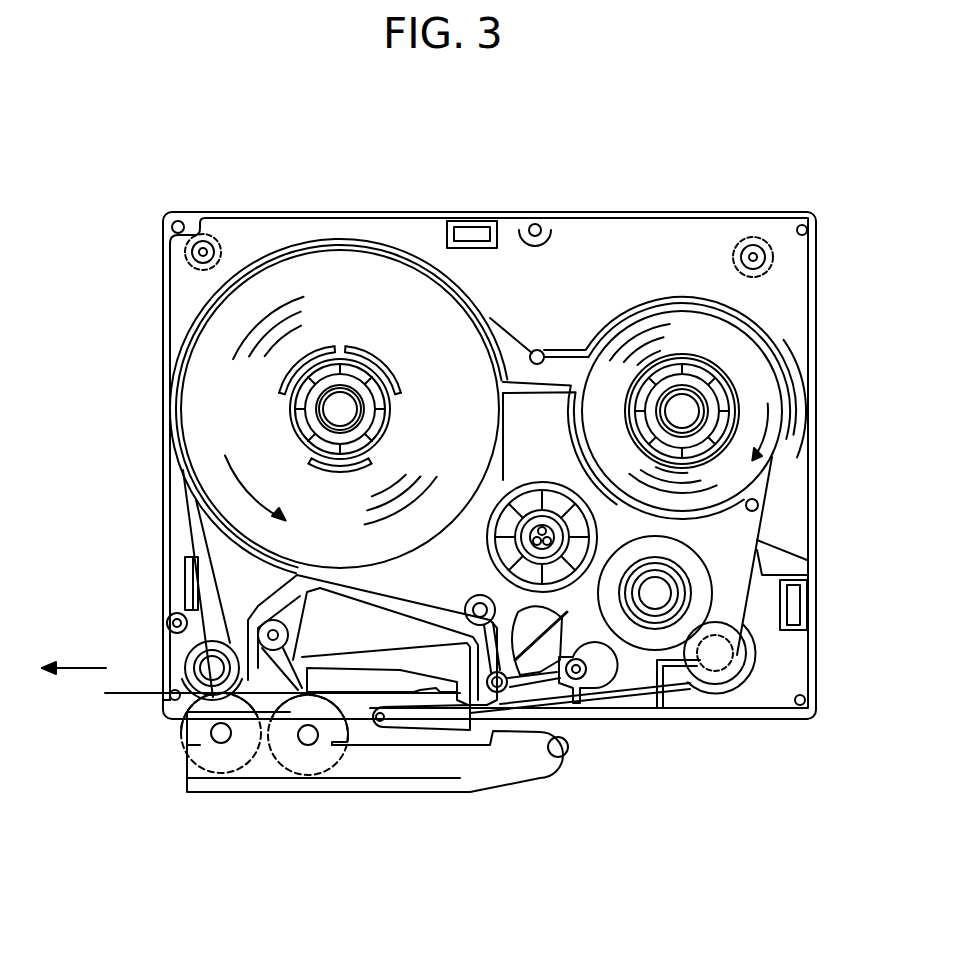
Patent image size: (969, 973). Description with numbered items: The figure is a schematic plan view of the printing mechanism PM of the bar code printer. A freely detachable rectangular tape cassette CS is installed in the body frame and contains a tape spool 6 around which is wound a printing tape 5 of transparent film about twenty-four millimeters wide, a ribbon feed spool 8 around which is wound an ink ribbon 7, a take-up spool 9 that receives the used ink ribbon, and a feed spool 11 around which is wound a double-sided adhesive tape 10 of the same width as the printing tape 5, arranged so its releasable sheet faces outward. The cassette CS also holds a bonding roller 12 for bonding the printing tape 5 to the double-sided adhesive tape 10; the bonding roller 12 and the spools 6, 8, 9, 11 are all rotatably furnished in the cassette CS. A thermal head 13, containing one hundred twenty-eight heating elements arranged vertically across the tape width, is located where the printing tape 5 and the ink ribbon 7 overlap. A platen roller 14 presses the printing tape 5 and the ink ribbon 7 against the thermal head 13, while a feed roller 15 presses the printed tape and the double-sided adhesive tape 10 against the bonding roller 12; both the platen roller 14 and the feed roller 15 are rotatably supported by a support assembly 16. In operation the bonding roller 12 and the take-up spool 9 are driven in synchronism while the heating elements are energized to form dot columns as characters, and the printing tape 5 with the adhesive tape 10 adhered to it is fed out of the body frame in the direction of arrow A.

The tape cassette CS is at (818, 462).
The double-sided adhesive tape 10 is at (328, 262).
The feed spool 11 is at (343, 357).
The printing tape 5 is at (692, 325).
The tape spool 6 is at (718, 378).
The take-up spool 9 is at (550, 480).
The ink ribbon 7 is at (690, 565).
The ribbon feed spool 8 is at (712, 600).
The bonding roller 12 is at (205, 660).
The thermal head 13 is at (350, 695).
The platen roller 14 is at (305, 762).
The feed roller 15 is at (225, 762).
The support assembly 16 is at (440, 792).
The arrow A is at (83, 668).
The printing mechanism PM is at (118, 752).